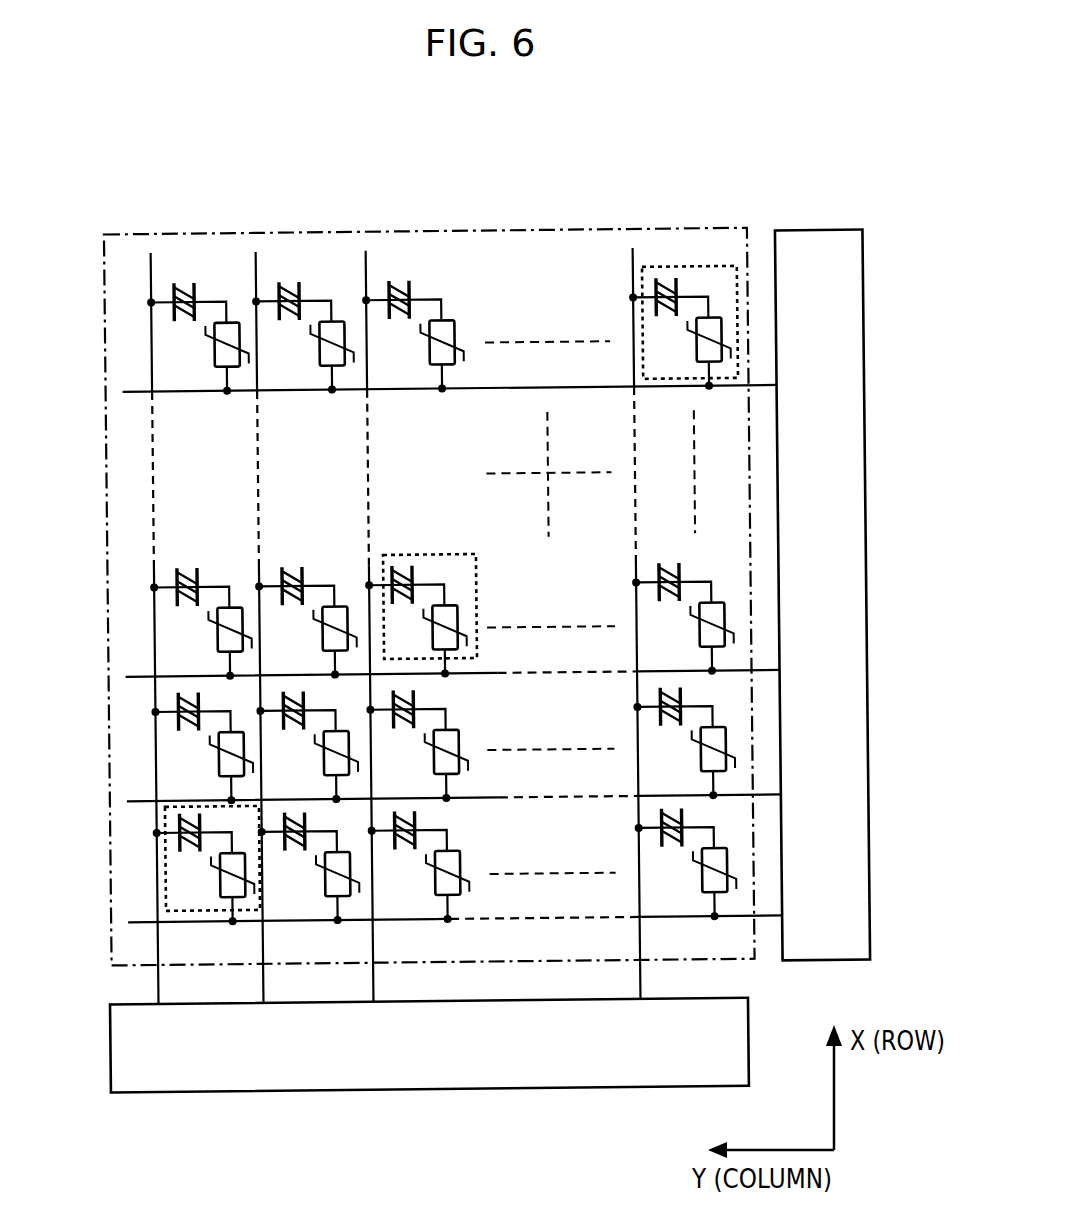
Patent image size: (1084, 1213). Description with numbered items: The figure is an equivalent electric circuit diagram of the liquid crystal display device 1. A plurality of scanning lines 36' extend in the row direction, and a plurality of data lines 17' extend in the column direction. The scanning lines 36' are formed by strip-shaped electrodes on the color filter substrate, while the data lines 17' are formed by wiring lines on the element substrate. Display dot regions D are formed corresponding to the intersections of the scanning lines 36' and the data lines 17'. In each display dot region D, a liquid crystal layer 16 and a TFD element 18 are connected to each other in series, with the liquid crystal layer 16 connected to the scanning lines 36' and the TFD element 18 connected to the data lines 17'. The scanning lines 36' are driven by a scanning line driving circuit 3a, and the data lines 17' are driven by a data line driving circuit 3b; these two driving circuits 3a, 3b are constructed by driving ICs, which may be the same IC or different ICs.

The liquid crystal display device 1 is at (770, 203).
The scanning line driving circuit 3a is at (328, 1093).
The data line driving circuit 3b is at (867, 474).
The liquid crystal layer 16 is at (186, 567).
The data line 17' is at (420, 618).
The TFD element 18 is at (455, 335).
The scanning line 36' is at (358, 597).
The display dot region D is at (668, 392).